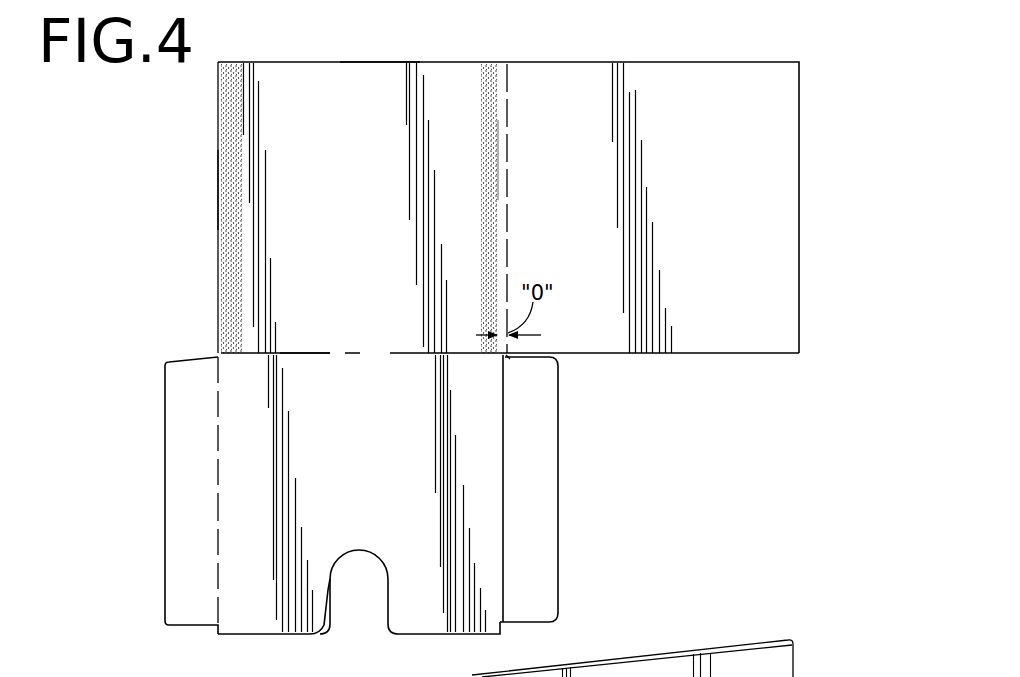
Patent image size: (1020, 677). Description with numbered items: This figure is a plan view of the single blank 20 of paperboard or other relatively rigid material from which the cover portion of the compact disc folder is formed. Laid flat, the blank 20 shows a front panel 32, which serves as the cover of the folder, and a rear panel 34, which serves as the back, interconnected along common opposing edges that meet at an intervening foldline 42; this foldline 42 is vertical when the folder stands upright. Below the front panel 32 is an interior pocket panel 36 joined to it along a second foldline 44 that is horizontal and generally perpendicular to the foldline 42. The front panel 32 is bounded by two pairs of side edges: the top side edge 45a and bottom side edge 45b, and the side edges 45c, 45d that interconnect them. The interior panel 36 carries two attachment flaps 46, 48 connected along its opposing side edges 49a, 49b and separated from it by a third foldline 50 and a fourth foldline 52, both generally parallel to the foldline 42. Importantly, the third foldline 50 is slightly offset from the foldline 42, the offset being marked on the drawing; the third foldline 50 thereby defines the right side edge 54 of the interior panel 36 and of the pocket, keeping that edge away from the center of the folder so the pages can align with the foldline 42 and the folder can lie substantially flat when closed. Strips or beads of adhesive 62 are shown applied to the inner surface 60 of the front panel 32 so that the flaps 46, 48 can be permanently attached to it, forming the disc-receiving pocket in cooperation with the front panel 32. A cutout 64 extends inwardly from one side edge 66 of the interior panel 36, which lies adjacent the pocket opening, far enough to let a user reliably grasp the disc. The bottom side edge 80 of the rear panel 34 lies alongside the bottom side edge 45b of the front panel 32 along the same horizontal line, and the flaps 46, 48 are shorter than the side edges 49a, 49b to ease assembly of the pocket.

The blank 20 is at (770, 56).
The front panel 32 is at (345, 217).
The rear panel 34 is at (723, 204).
The interior pocket panel 36 is at (355, 479).
The foldline 42 is at (508, 222).
The second foldline 44 is at (355, 352).
The top side edge 45a is at (377, 62).
The bottom side edge 45b is at (313, 353).
The side edge 45c is at (222, 190).
The side edge 45d is at (508, 178).
The flap 46 is at (546, 492).
The flap 48 is at (165, 490).
The side edge 49a is at (503, 468).
The side edge 49b is at (250, 547).
The third foldline 50 is at (503, 430).
The fourth foldline 52 is at (250, 460).
The right side edge 54 is at (506, 357).
The inner surface 60 is at (345, 152).
The adhesive strips 62 is at (483, 93).
The cutout 64 is at (358, 597).
The side edge 66 is at (275, 634).
The bottom side edge 80 is at (727, 352).